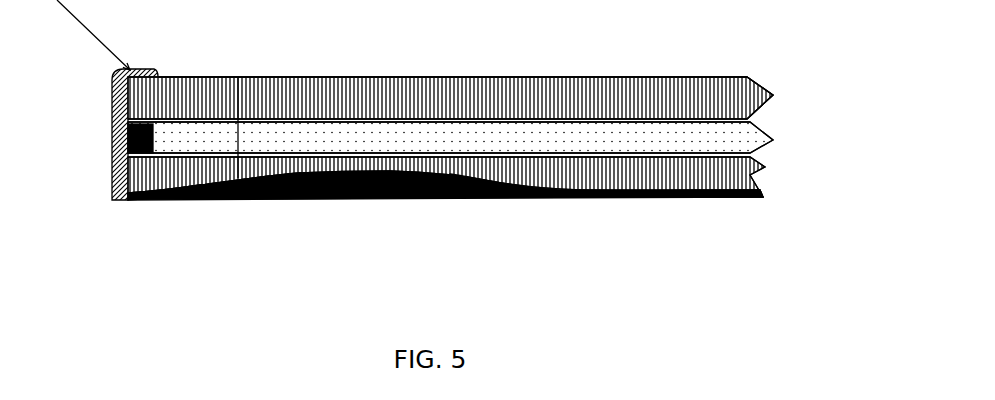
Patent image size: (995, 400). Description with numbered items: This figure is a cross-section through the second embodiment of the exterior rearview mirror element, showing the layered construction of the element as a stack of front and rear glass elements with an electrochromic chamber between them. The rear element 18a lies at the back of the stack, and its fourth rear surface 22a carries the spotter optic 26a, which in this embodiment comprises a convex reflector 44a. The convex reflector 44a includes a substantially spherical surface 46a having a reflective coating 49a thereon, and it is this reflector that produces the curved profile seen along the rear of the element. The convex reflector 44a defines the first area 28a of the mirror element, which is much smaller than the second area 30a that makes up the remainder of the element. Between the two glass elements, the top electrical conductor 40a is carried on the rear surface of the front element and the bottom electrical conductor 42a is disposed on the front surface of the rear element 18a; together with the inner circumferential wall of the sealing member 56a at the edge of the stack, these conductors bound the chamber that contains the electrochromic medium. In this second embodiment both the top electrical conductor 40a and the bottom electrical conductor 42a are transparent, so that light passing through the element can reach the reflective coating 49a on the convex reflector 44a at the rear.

The rear element 18a is at (759, 178).
The fourth rear surface 22a is at (650, 207).
The spotter optic 26a is at (387, 185).
The first area 28a is at (667, 68).
The second area 30a is at (294, 67).
The top electrical conductor 40a is at (531, 108).
The bottom electrical conductor 42a is at (565, 166).
The convex reflector 44a is at (241, 171).
The substantially spherical surface 46a is at (195, 193).
The reflective coating 49a is at (491, 194).
The sealing member 56a is at (138, 162).